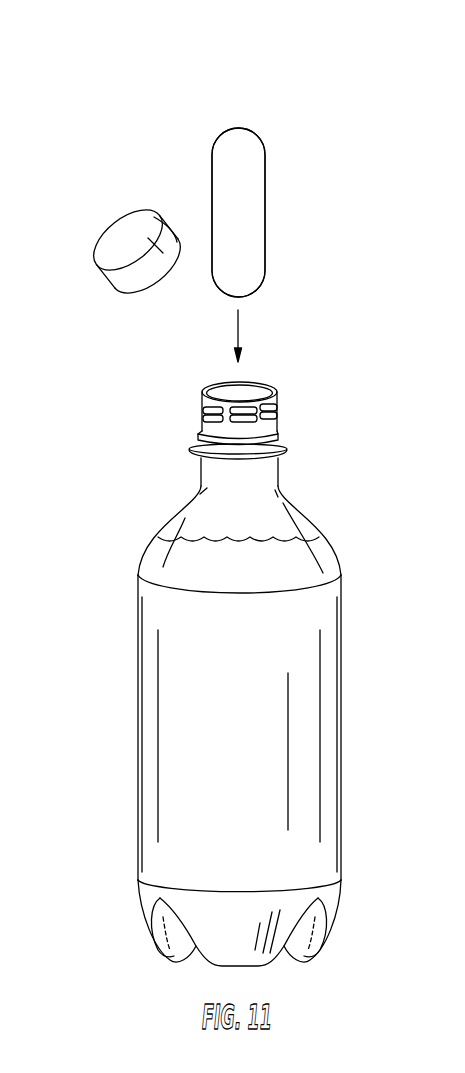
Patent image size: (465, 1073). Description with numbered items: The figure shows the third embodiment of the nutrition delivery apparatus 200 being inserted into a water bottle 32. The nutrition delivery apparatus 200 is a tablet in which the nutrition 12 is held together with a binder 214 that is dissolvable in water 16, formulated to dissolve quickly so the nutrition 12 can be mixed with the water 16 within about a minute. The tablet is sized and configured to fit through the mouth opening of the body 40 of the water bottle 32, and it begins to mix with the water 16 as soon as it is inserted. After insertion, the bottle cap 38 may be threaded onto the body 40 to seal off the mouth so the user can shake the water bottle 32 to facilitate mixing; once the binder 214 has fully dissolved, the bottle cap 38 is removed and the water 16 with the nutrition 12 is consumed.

The nutrition delivery apparatus 200 is at (269, 106).
The nutrition 12 is at (253, 157).
The binder 214 is at (255, 217).
The bottle cap 38 is at (110, 198).
The water bottle 32 is at (412, 205).
The body 40 is at (105, 389).
The water 16 is at (307, 578).